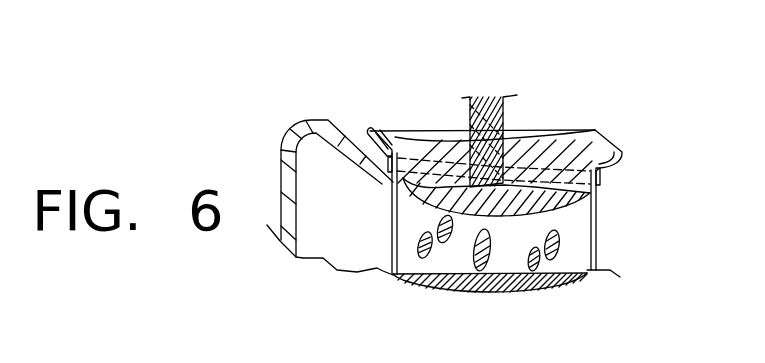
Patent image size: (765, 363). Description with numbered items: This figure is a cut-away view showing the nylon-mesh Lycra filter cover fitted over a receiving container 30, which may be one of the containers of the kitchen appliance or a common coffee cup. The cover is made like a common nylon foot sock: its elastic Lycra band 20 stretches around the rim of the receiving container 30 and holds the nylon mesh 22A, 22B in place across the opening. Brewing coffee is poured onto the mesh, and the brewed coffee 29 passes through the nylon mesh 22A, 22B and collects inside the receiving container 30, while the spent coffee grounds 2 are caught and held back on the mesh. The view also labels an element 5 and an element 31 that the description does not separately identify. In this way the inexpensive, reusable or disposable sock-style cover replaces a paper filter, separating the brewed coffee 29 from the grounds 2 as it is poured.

The coffee grounds 2 is at (522, 190).
The housing wall 5 is at (340, 123).
The Lycra band 20 is at (600, 177).
The nylon mesh 22A is at (517, 195).
The nylon mesh 22B is at (578, 192).
The brewed coffee 29 is at (537, 265).
The receiving container 30 is at (595, 246).
The post 31 is at (483, 112).